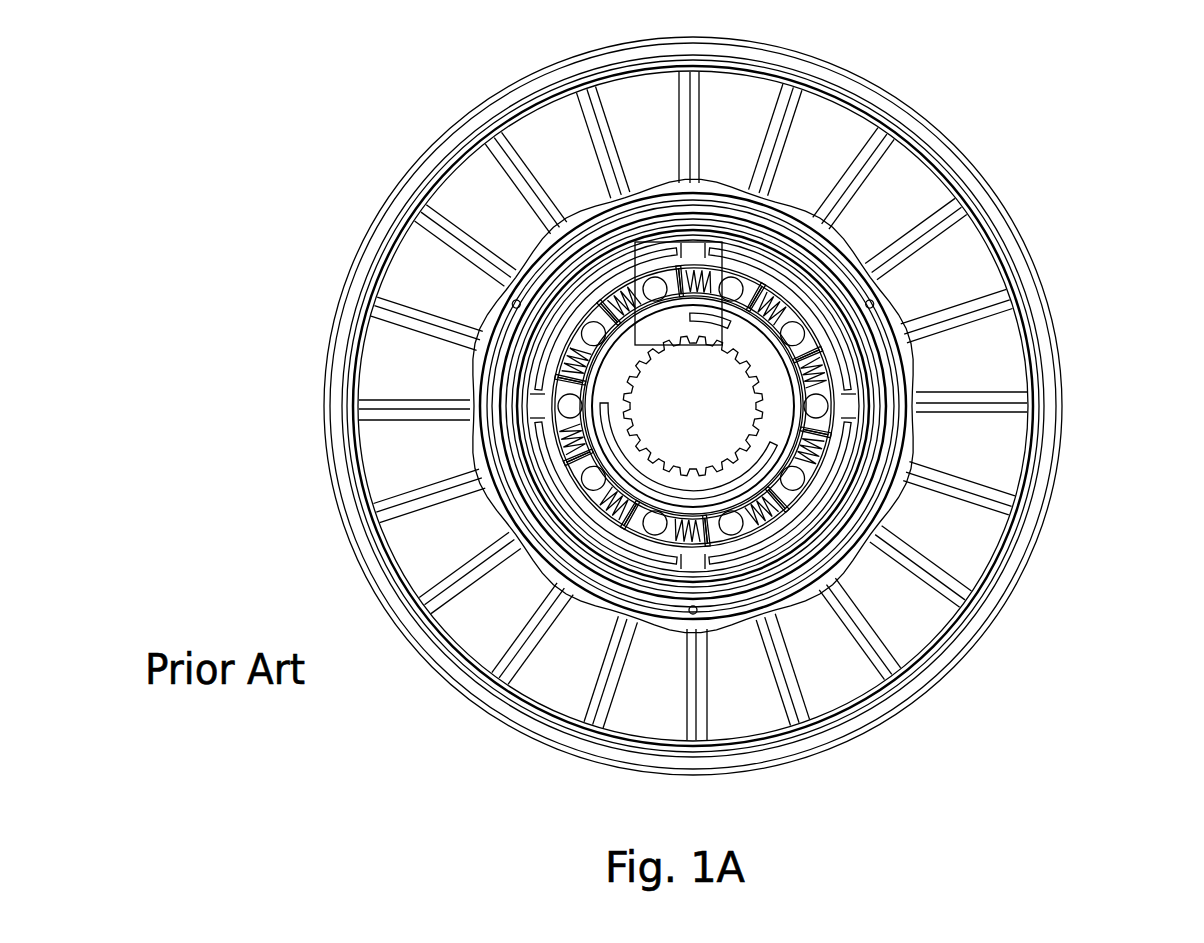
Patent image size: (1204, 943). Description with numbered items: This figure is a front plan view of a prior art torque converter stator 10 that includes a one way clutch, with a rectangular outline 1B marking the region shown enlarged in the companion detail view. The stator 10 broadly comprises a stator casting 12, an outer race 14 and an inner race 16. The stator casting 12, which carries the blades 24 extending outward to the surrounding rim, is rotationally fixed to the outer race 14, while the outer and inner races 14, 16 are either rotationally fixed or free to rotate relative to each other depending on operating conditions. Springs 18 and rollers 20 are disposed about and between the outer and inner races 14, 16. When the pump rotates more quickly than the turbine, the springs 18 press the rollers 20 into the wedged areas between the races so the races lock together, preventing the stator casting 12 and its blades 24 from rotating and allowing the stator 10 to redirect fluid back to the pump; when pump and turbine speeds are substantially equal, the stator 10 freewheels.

The stator 10 is at (1110, 104).
The stator casting 12 is at (1048, 290).
The outer race 14 is at (862, 440).
The inner race 16 is at (617, 377).
The springs 18 is at (800, 342).
The rollers 20 is at (620, 507).
The blades 24 is at (963, 553).
The detail region of FIG. 1B is at (634, 283).